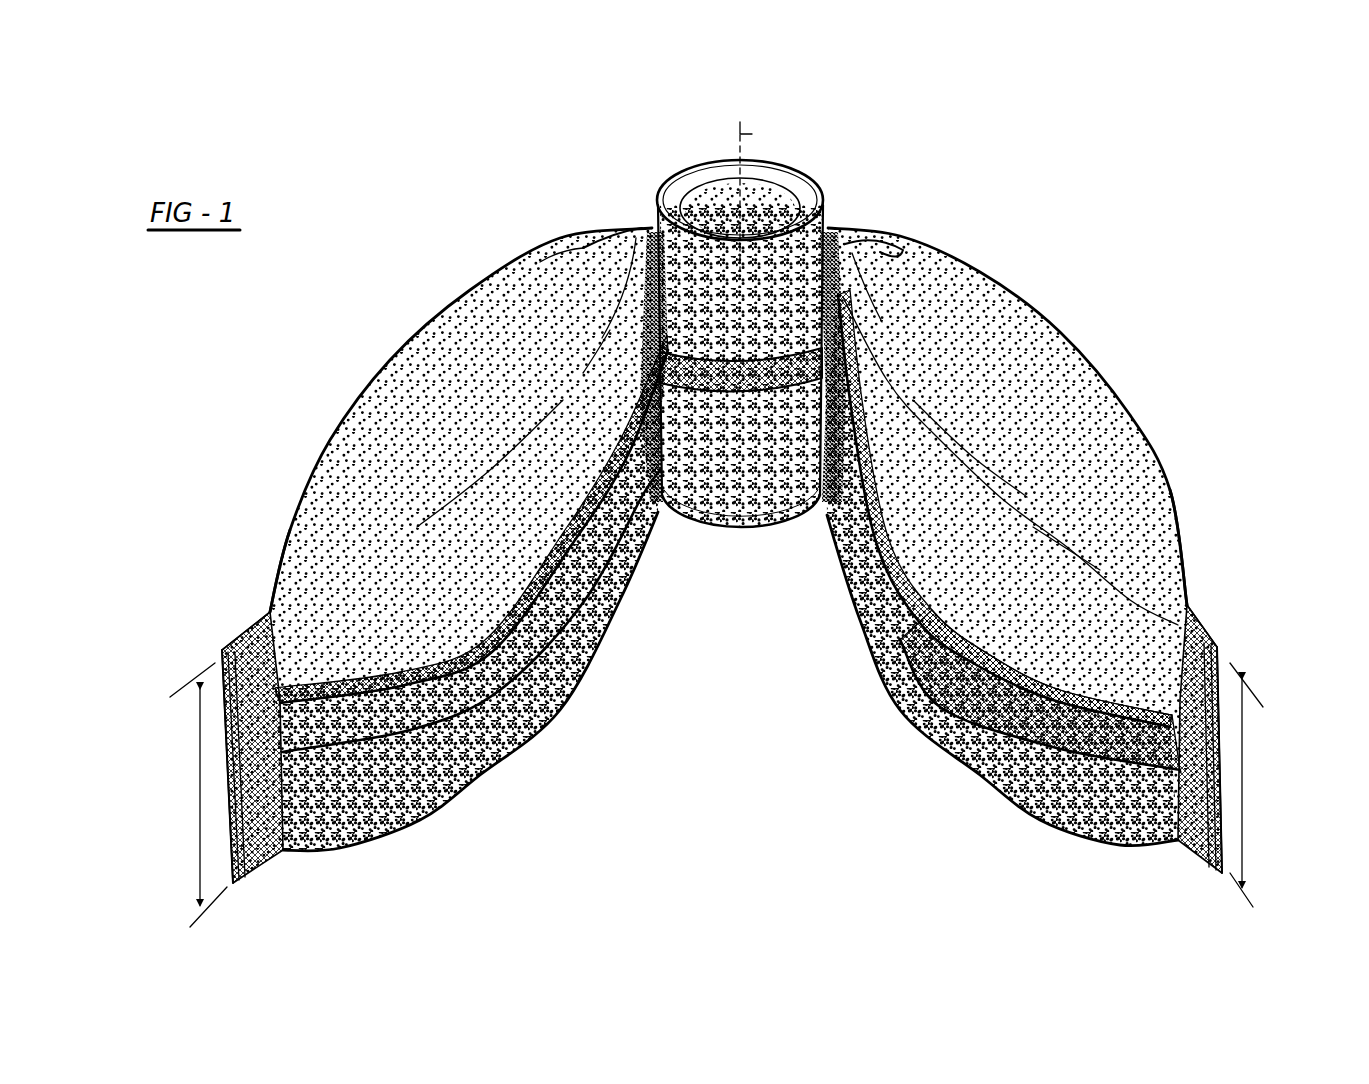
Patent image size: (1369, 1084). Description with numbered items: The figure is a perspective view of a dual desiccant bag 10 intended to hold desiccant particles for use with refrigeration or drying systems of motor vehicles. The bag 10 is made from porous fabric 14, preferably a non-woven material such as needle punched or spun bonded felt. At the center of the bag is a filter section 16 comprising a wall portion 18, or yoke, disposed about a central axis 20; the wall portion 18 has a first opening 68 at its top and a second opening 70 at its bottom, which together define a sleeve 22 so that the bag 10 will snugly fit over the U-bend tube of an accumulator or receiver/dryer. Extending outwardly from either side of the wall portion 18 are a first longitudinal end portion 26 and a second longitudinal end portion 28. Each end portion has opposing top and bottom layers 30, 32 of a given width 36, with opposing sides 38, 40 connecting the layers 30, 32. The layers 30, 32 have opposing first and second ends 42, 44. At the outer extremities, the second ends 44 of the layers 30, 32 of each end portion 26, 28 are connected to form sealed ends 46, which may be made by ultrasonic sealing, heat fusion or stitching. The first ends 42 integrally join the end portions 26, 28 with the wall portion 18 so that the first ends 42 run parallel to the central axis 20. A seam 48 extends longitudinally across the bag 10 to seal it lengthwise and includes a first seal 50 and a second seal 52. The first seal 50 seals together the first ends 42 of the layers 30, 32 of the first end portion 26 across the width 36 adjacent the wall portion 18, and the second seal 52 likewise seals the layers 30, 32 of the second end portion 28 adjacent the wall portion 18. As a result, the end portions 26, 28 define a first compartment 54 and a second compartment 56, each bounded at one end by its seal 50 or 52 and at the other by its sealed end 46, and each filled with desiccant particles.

The dual desiccant bag 10 is at (1042, 212).
The porous fabric 14 is at (515, 308).
The filter section 16 is at (710, 160).
The wall portion 18 is at (752, 500).
The central axis 20 is at (768, 130).
The sleeve 22 is at (758, 220).
The first longitudinal end portion 26 is at (320, 452).
The second longitudinal end portion 28 is at (1120, 415).
The top layer 30 is at (282, 522).
The bottom layer 32 is at (568, 640).
The width 36 is at (200, 785).
The first side 38 is at (388, 828).
The second side 40 is at (400, 395).
The first end 42 is at (650, 208).
The second end 44 is at (250, 602).
The sealed end 46 is at (246, 890).
The seam 48 is at (936, 712).
The first seal 50 is at (645, 218).
The second seal 52 is at (838, 224).
The first compartment 54 is at (492, 562).
The second compartment 56 is at (1082, 638).
The first opening 68 is at (792, 190).
The second opening 70 is at (712, 522).